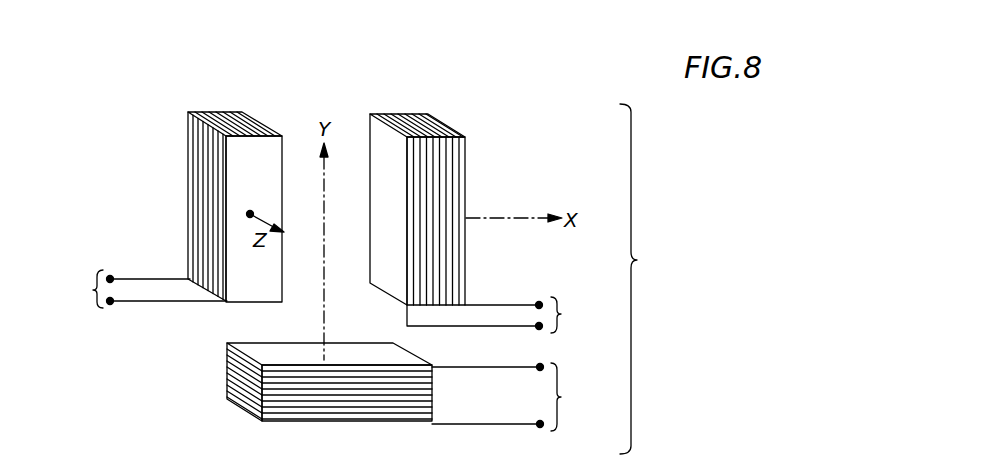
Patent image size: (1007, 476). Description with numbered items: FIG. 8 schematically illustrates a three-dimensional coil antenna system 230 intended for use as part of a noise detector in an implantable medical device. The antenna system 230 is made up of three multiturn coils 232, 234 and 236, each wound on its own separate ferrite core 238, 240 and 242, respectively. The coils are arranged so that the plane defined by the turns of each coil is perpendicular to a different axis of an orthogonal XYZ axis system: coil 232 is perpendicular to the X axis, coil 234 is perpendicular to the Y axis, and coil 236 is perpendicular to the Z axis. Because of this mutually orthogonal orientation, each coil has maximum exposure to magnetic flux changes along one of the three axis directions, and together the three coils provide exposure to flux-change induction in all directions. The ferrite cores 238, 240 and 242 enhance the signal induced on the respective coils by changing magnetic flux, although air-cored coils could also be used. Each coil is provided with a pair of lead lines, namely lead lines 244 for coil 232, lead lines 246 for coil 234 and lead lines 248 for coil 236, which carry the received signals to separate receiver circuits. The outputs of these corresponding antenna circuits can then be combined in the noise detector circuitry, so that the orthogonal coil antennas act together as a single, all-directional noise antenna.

The three-dimensional coil antenna system 230 is at (636, 259).
The multiturn coil 232 is at (433, 177).
The multiturn coil 234 is at (360, 398).
The multiturn coil 236 is at (210, 162).
The ferrite core 238 is at (387, 172).
The ferrite core 240 is at (282, 352).
The ferrite core 242 is at (261, 163).
The lead lines 244 is at (561, 314).
The lead lines 246 is at (561, 397).
The lead lines 248 is at (93, 290).